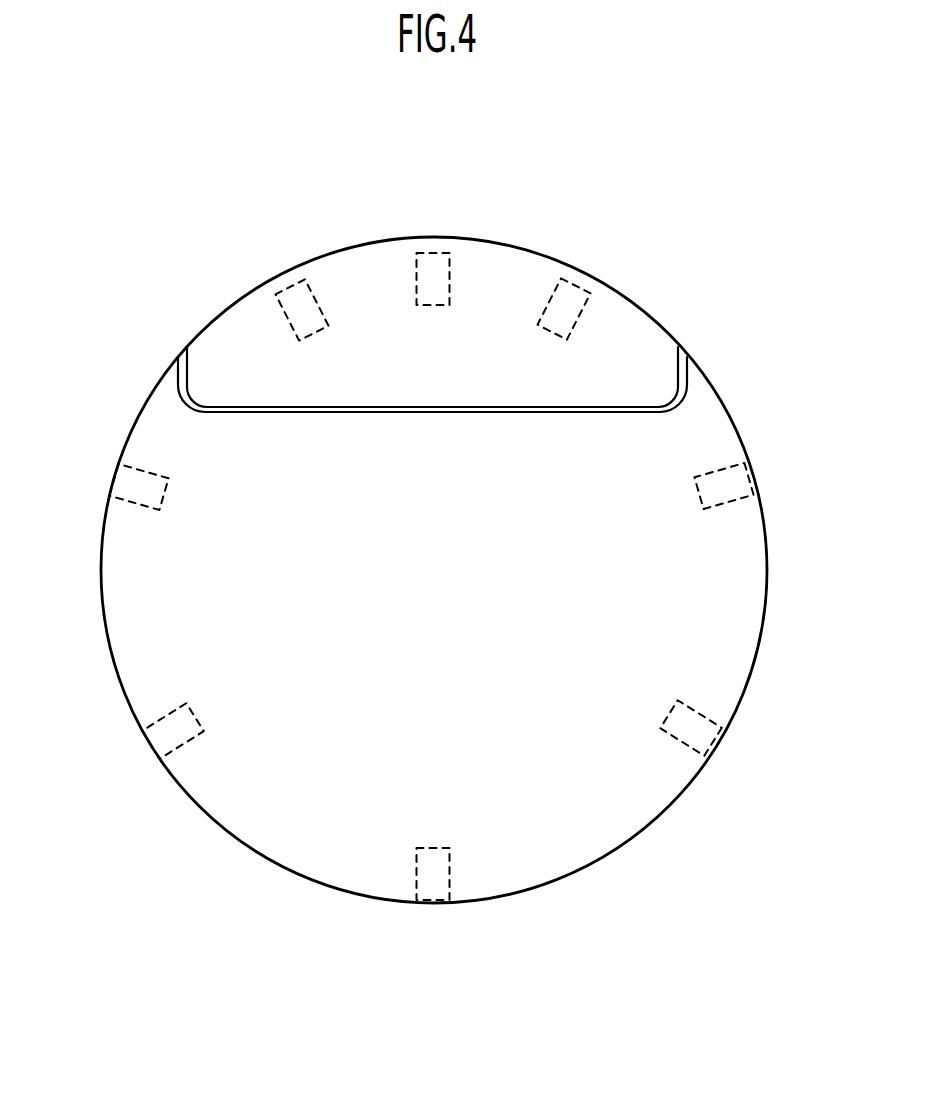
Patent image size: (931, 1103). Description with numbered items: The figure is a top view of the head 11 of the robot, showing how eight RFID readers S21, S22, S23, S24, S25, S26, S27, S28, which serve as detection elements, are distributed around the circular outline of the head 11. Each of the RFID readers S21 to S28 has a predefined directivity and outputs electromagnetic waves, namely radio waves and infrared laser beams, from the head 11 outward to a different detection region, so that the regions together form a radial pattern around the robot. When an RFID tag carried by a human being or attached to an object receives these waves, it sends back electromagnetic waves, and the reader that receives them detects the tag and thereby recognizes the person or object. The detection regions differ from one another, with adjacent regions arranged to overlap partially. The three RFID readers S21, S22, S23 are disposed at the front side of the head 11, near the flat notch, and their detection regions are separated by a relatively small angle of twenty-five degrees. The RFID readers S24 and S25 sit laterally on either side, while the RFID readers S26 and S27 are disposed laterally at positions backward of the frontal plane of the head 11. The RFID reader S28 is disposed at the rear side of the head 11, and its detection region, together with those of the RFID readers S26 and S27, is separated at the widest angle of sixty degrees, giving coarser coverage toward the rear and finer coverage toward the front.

The head 11 is at (713, 251).
The RFID reader S21 is at (428, 251).
The RFID reader S22 is at (292, 283).
The RFID reader S23 is at (577, 284).
The RFID reader S24 is at (124, 476).
The RFID reader S25 is at (744, 474).
The RFID reader S26 is at (151, 742).
The RFID reader S27 is at (716, 742).
The RFID reader S28 is at (437, 889).